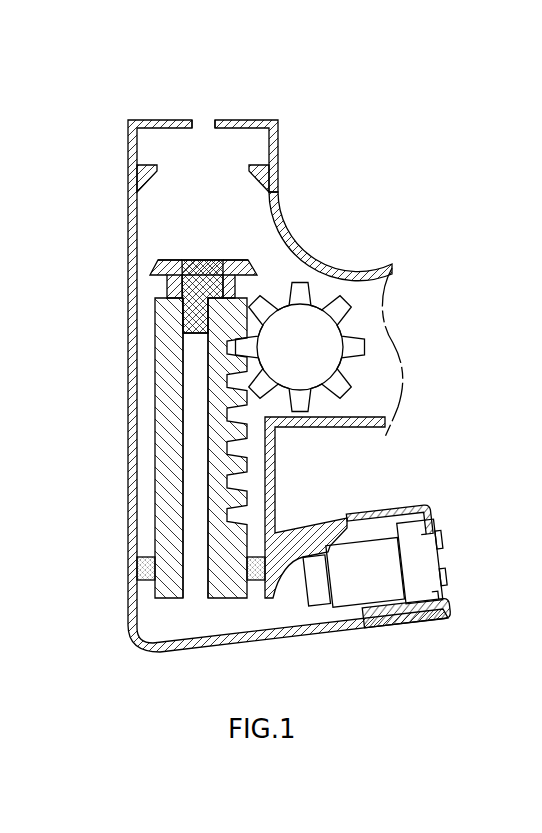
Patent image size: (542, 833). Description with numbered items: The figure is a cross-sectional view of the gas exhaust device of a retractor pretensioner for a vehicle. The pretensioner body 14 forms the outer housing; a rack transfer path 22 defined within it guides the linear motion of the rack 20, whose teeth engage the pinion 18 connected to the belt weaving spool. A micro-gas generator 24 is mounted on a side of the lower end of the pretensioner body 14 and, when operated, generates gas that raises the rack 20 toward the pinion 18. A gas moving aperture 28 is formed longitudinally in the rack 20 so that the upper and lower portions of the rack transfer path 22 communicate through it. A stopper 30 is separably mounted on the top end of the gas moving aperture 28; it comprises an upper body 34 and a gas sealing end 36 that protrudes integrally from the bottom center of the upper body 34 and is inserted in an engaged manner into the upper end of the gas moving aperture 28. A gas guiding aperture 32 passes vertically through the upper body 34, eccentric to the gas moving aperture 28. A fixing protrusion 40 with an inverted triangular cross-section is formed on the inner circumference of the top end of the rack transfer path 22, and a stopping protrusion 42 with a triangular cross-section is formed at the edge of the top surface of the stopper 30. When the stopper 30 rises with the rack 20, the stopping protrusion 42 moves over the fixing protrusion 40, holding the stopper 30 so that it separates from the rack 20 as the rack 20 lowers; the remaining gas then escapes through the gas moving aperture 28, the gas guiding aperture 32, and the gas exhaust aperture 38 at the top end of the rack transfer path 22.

The pretensioner body 14 is at (127, 321).
The pinion 18 is at (366, 337).
The rack 20 is at (183, 435).
The rack transfer path 22 is at (146, 295).
The micro-gas generator (MGG) 24 is at (367, 585).
The gas moving aperture 28 is at (188, 510).
The stopper 30 is at (205, 261).
The gas guiding aperture 32 is at (268, 282).
The upper body 34 is at (183, 262).
The gas sealing end 36 is at (198, 332).
The gas exhaust aperture 38 is at (205, 126).
The fixing protrusion 40 is at (263, 166).
The stopping protrusion 42 is at (231, 252).